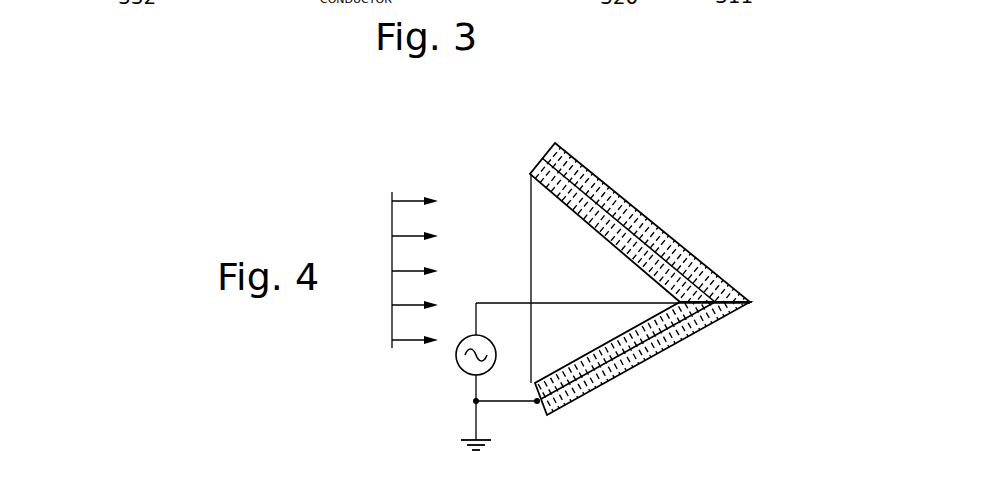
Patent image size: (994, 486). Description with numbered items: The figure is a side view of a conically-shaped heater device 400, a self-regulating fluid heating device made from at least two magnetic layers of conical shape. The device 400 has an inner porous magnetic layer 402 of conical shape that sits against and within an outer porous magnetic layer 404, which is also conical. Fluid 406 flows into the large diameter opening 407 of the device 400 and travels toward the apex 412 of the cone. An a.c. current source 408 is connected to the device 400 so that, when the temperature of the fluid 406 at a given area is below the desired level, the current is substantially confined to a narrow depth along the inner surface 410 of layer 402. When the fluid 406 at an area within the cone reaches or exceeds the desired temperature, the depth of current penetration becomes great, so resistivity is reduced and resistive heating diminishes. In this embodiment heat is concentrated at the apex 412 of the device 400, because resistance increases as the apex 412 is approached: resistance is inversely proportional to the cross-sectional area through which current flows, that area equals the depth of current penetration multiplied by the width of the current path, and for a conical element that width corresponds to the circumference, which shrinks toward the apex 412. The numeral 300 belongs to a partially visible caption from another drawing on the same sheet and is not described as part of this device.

In FIG. 3, the antenna of FIG. 3 300 is at (224, 7).
In FIG. 4, the conically-shaped heater device 400 is at (609, 284).
In FIG. 4, the inner porous magnetic layer 402 is at (642, 351).
In FIG. 4, the outer porous magnetic layer 404 is at (567, 403).
In FIG. 4, the fluid 406 is at (429, 196).
In FIG. 4, the large diameter opening 407 is at (530, 265).
In FIG. 4, the a.c. current source 408 is at (462, 376).
In FIG. 4, the inner surface 410 is at (616, 236).
In FIG. 4, the apex 412 is at (683, 302).